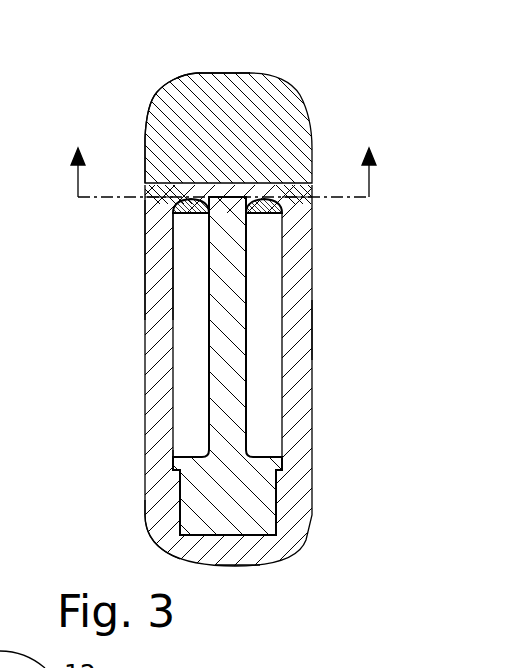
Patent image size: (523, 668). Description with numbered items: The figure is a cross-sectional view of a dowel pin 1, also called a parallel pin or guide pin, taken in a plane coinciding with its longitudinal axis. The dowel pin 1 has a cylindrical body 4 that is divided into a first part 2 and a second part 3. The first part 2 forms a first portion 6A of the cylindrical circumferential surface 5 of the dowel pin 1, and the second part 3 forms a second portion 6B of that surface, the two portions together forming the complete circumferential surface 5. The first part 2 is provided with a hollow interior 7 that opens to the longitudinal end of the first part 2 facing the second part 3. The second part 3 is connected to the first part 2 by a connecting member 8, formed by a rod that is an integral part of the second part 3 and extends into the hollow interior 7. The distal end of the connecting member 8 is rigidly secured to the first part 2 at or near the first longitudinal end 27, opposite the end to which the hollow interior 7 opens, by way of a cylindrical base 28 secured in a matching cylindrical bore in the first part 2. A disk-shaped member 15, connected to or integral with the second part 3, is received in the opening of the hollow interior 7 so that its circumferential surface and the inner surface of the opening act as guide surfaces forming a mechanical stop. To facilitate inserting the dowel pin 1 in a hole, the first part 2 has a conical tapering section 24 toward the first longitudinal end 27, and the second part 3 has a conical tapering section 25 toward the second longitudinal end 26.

The dowel pin 1 is at (333, 58).
The first part 2 is at (147, 437).
The second part 3 is at (310, 125).
The cylindrical body 4 is at (342, 317).
The circumferential surface 5 is at (117, 223).
The first portion 6A is at (147, 270).
The second portion 6B is at (148, 157).
The hollow interior 7 is at (188, 297).
The connecting member 8 is at (227, 362).
The disk-shaped member 15 is at (285, 205).
The tapering section 24 is at (148, 533).
The tapering section 25 is at (152, 107).
The second longitudinal end 26 is at (190, 74).
The first longitudinal end 27 is at (267, 564).
The cylindrical base 28 is at (250, 500).